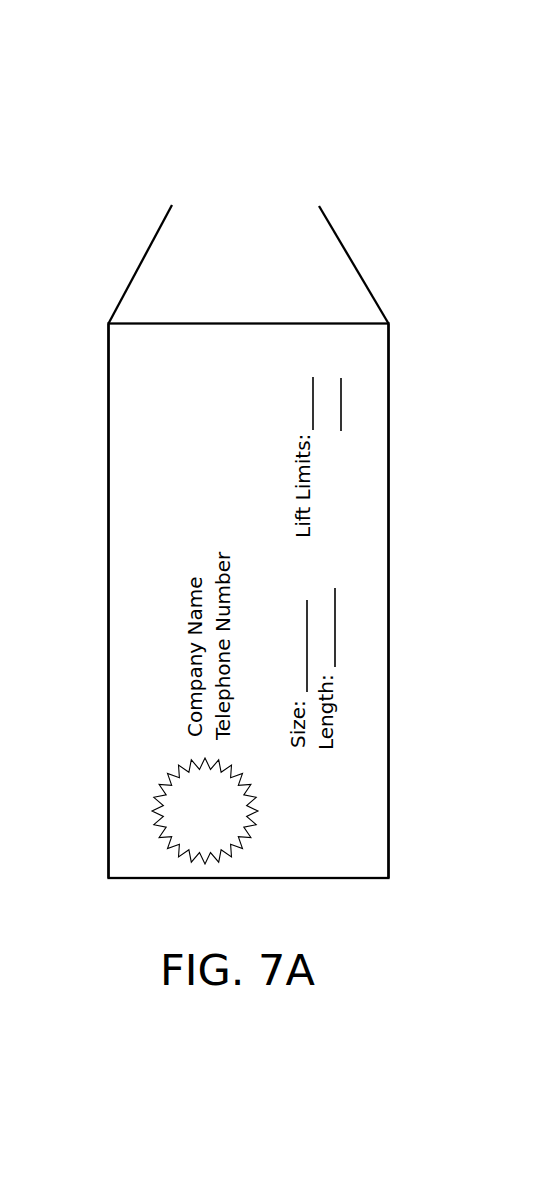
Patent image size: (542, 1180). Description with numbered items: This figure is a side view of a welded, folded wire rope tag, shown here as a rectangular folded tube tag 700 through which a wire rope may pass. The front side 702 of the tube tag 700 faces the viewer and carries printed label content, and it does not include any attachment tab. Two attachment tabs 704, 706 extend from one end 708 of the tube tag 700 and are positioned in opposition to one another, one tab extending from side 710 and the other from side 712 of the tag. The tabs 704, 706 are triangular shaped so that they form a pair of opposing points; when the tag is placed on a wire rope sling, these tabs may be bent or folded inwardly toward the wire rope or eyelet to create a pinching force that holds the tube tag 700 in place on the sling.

The folded tube tag 700 is at (366, 102).
The front side 702 is at (363, 828).
The attachment tab 704 is at (143, 258).
The attachment tab 706 is at (377, 297).
The end of the tube tag 708 is at (390, 325).
The side of the tube tag 710 is at (388, 567).
The side of the tube tag 712 is at (108, 602).